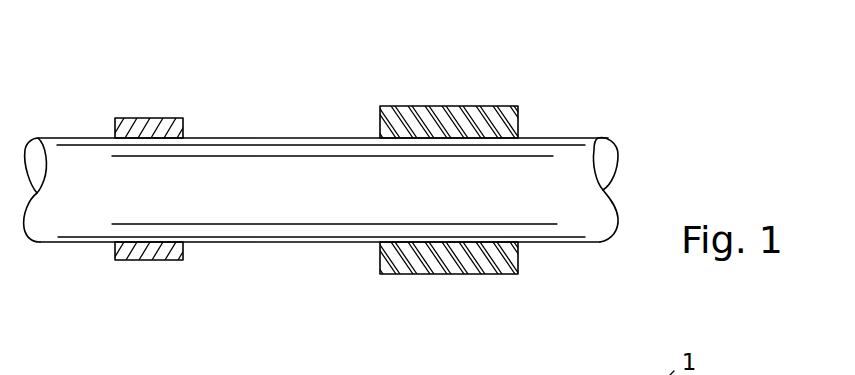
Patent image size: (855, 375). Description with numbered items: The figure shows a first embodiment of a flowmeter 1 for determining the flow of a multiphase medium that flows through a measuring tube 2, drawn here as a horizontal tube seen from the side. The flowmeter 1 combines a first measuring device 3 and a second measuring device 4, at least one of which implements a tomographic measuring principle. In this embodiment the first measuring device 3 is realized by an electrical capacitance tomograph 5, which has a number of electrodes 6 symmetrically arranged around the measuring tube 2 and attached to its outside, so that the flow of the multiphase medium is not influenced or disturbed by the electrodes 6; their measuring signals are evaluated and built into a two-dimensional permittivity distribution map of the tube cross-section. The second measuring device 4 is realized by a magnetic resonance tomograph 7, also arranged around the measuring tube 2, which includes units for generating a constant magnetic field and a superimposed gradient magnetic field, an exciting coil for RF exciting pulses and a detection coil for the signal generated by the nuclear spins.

The flowmeter 1 is at (596, 108).
The measuring tube 2 is at (293, 156).
The first measuring device 3 is at (117, 273).
The second measuring device 4 is at (393, 287).
The electrical capacitance tomograph 5 is at (153, 118).
The electrodes 6 is at (152, 260).
The magnetic resonance tomograph 7 is at (447, 118).